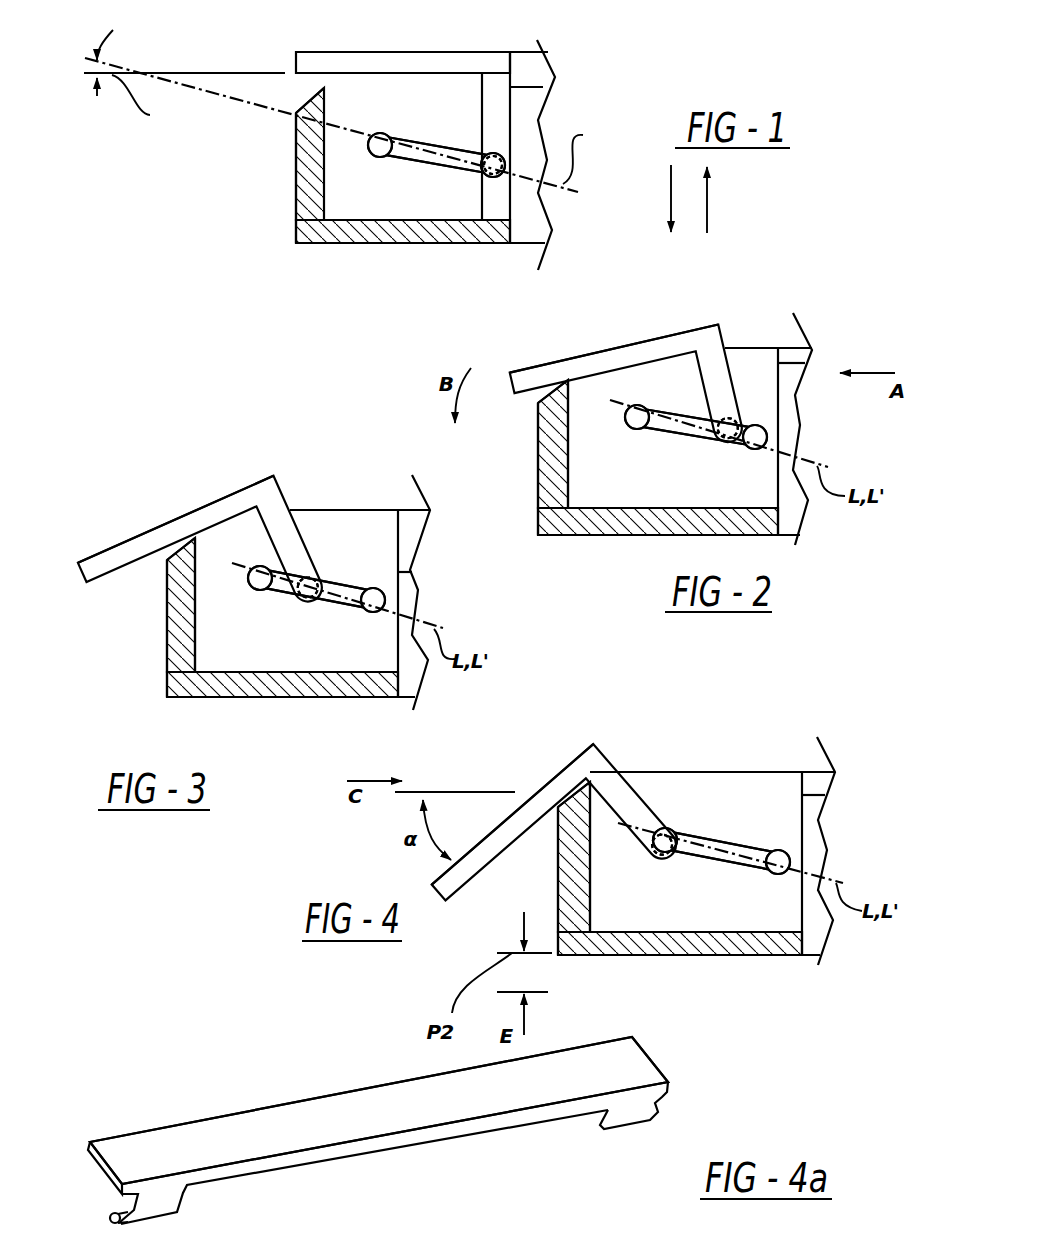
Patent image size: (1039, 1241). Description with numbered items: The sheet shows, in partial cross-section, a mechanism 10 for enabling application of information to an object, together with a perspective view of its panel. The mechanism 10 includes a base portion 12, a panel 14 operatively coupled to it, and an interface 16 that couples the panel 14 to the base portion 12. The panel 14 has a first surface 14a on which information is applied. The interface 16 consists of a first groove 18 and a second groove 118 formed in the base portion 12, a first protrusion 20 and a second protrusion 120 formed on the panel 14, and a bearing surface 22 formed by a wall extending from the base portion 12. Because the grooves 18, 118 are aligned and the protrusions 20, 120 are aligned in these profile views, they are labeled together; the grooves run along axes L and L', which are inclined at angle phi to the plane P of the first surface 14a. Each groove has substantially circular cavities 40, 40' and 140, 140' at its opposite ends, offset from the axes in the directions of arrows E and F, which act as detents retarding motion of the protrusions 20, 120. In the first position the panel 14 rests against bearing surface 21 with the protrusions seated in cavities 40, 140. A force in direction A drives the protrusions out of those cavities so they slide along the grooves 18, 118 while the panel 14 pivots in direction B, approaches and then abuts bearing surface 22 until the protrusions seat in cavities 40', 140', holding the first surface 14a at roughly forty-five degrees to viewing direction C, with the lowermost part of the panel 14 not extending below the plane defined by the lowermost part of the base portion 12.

In FIG. 1, the mechanism 10 is at (407, 159).
In FIG. 1, the base portion 12 is at (545, 248).
In FIG. 2, the base portion 12 is at (752, 347).
In FIG. 3, the base portion 12 is at (336, 508).
In FIG. 4, the base portion 12 is at (758, 770).
In FIG. 1, the panel 14 is at (296, 50).
In FIG. 2, the panel 14 is at (502, 393).
In FIG. 3, the panel 14 is at (78, 583).
In FIG. 4, the panel 14 is at (440, 906).
In FIG. 4A, the panel 14 is at (490, 1134).
In FIG. 2, the first surface 14a is at (620, 340).
In FIG. 3, the first surface 14a is at (200, 515).
In FIG. 4, the first surface 14a is at (581, 764).
In FIG. 4A, the first surface 14a is at (340, 1113).
In FIG. 1, the interface 16 is at (462, 130).
In FIG. 2, the interface 16 is at (765, 414).
In FIG. 3, the interface 16 is at (352, 561).
In FIG. 4, the interface 16 is at (772, 829).
In FIG. 1, the first groove 18 is at (437, 160).
In FIG. 2, the first groove 18 is at (687, 430).
In FIG. 3, the first groove 18 is at (342, 604).
In FIG. 4, the first groove 18 is at (721, 851).
In FIG. 1, the second groove 118 is at (437, 160).
In FIG. 2, the second groove 118 is at (687, 430).
In FIG. 3, the second groove 118 is at (342, 604).
In FIG. 4, the second groove 118 is at (721, 851).
In FIG. 1, the first protrusion 20 is at (497, 152).
In FIG. 2, the first protrusion 20 is at (752, 433).
In FIG. 3, the first protrusion 20 is at (313, 594).
In FIG. 4, the first protrusion 20 is at (662, 845).
In FIG. 4A, the first protrusion 20 is at (110, 1218).
In FIG. 1, the second protrusion 120 is at (497, 152).
In FIG. 2, the second protrusion 120 is at (752, 433).
In FIG. 3, the second protrusion 120 is at (313, 594).
In FIG. 4, the second protrusion 120 is at (662, 845).
In FIG. 4A, the second protrusion 120 is at (660, 1110).
In FIG. 1, the bearing surface 21 is at (512, 88).
In FIG. 2, the bearing surface 21 is at (812, 363).
In FIG. 3, the bearing surface 21 is at (412, 572).
In FIG. 4, the bearing surface 21 is at (825, 796).
In FIG. 1, the bearing surface 22 is at (312, 97).
In FIG. 2, the bearing surface 22 is at (552, 393).
In FIG. 3, the bearing surface 22 is at (178, 543).
In FIG. 4, the bearing surface 22 is at (560, 797).
In FIG. 1, the circular cavity 40 is at (486, 233).
In FIG. 2, the circular cavity 40 is at (824, 496).
In FIG. 3, the circular cavity 40 is at (251, 663).
In FIG. 4, the circular cavity 40 is at (778, 862).
In FIG. 1, the circular cavity 140 is at (486, 233).
In FIG. 2, the circular cavity 140 is at (824, 496).
In FIG. 3, the circular cavity 140 is at (251, 663).
In FIG. 4, the circular cavity 140 is at (778, 862).
In FIG. 1, the circular cavity 40' is at (284, 178).
In FIG. 2, the circular cavity 40' is at (570, 500).
In FIG. 3, the circular cavity 40' is at (260, 578).
In FIG. 4, the circular cavity 40' is at (665, 840).
In FIG. 1, the circular cavity 140' is at (284, 178).
In FIG. 2, the circular cavity 140' is at (570, 500).
In FIG. 3, the circular cavity 140' is at (260, 578).
In FIG. 4, the circular cavity 140' is at (665, 840).